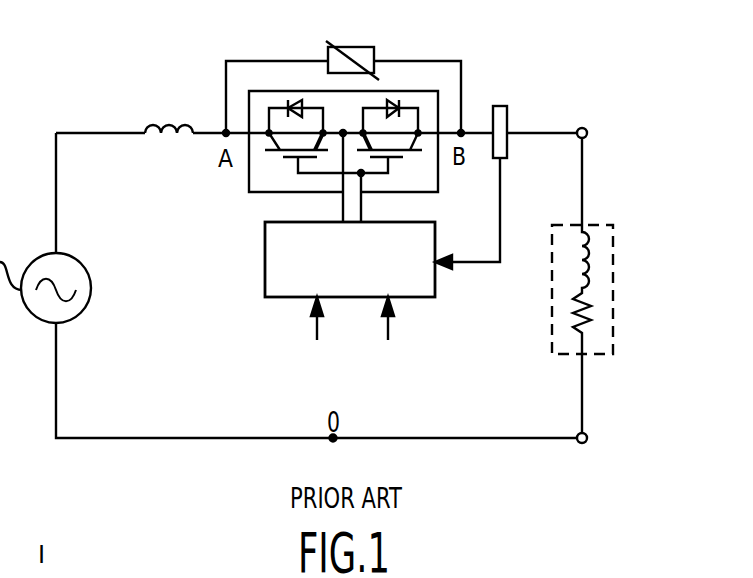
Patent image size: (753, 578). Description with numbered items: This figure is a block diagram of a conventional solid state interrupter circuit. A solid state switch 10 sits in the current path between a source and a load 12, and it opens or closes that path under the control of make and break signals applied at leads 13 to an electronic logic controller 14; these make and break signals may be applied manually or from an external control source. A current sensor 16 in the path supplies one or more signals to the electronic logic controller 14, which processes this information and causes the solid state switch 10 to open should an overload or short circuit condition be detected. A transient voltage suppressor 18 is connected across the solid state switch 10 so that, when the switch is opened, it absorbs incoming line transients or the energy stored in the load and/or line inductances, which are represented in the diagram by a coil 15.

The solid state switch 10 is at (273, 193).
The load 12 is at (613, 320).
The leads 13 is at (328, 381).
The electronic logic controller 14 is at (263, 268).
The coil 15 is at (168, 126).
The current sensor 16 is at (497, 106).
The transient voltage suppressor 18 is at (365, 44).